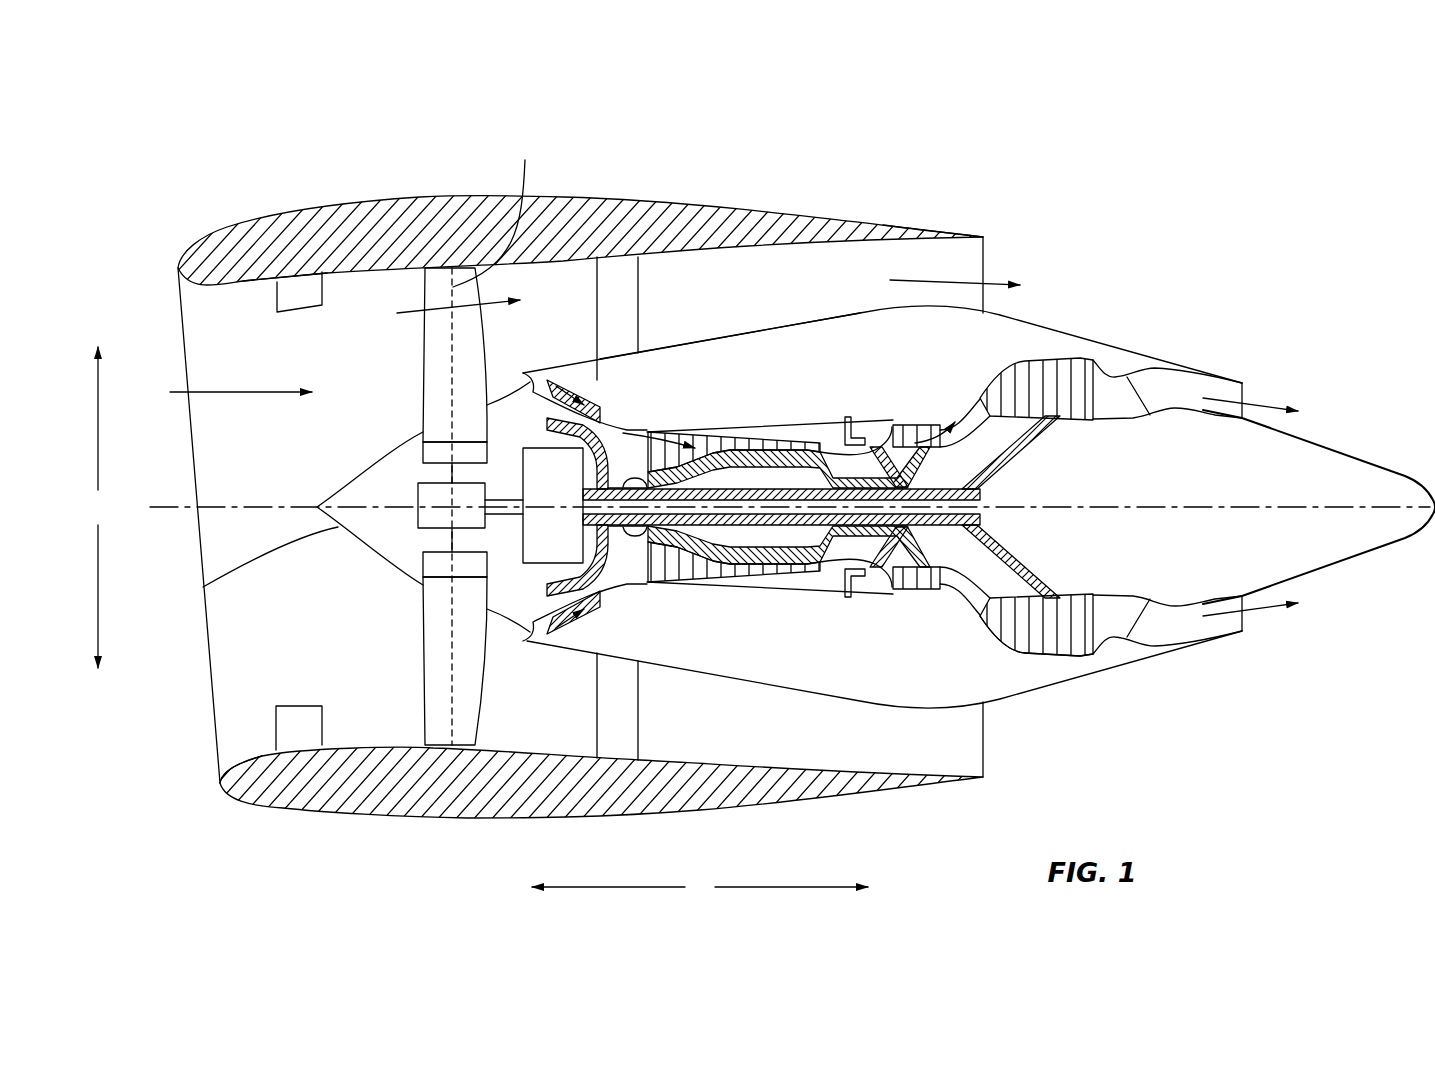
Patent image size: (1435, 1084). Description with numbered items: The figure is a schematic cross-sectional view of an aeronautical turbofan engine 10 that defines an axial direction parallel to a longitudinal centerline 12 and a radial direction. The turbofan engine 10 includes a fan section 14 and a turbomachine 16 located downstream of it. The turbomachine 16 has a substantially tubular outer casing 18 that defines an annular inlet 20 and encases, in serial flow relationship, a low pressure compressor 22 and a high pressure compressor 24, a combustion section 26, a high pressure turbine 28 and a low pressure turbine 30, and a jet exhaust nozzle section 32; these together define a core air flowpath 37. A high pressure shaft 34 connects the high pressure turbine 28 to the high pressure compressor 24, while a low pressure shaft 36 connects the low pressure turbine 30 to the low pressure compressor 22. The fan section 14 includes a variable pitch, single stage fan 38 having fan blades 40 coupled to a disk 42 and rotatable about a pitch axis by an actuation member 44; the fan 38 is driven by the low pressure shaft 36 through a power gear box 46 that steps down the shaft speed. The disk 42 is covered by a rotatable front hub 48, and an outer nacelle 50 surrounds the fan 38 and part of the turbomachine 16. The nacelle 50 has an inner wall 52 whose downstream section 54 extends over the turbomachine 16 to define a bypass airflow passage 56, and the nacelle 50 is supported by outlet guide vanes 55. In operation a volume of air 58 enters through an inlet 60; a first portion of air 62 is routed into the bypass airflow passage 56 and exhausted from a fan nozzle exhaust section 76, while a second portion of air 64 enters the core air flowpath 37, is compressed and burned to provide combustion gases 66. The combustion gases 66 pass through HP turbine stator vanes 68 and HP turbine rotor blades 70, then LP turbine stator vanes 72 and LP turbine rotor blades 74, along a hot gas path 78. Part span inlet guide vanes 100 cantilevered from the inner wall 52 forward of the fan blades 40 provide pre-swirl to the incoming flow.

The turbofan engine 10 is at (1147, 213).
The longitudinal centerline 12 is at (1173, 500).
The fan section 14 is at (462, 155).
The turbomachine 16 is at (810, 390).
The outer casing 18 is at (820, 693).
The annular inlet 20 is at (538, 626).
The low pressure compressor 22 is at (657, 585).
The high pressure compressor 24 is at (673, 575).
The combustion section 26 is at (868, 580).
The high pressure turbine 28 is at (942, 590).
The low pressure turbine 30 is at (1077, 655).
The jet exhaust nozzle section 32 is at (1148, 632).
The high pressure shaft 34 is at (880, 467).
The low pressure shaft 36 is at (990, 470).
The core air flowpath 37 is at (958, 609).
The fan 38 is at (383, 568).
The fan blades 40 is at (420, 678).
The disk 42 is at (440, 455).
The actuation member 44 is at (420, 488).
The power gear box 46 is at (575, 467).
The front nacelle or hub 48 is at (203, 587).
The outer nacelle 50 is at (477, 820).
The inner wall 52 is at (347, 272).
The downstream section 54 is at (920, 227).
The outlet guide vanes 55 is at (640, 290).
The bypass airflow passage 56 is at (753, 305).
The volume of air 58 is at (240, 392).
The inlet 60 is at (213, 752).
The first portion of air 62 is at (440, 300).
The second portion of air 64 is at (517, 382).
The combustion gases 66 is at (905, 430).
The HP turbine stator vanes 68 is at (888, 589).
The HP turbine rotor blades 70 is at (917, 560).
The LP turbine stator vanes 72 is at (990, 634).
The LP turbine rotor blades 74 is at (1005, 645).
The fan nozzle exhaust section 76 is at (972, 265).
The hot gas path 78 is at (968, 395).
The part span inlet guide vanes 100 is at (297, 283).